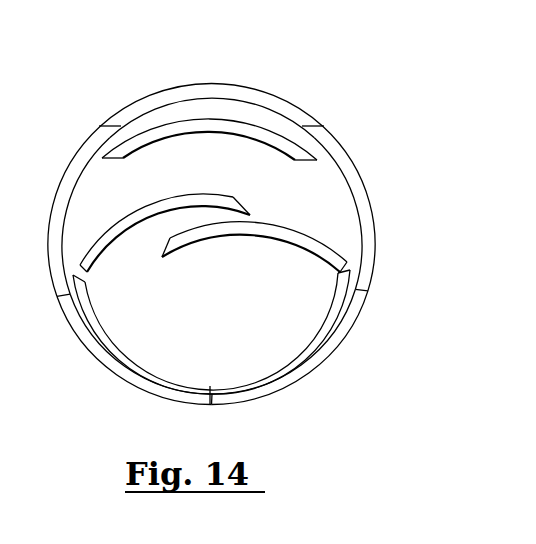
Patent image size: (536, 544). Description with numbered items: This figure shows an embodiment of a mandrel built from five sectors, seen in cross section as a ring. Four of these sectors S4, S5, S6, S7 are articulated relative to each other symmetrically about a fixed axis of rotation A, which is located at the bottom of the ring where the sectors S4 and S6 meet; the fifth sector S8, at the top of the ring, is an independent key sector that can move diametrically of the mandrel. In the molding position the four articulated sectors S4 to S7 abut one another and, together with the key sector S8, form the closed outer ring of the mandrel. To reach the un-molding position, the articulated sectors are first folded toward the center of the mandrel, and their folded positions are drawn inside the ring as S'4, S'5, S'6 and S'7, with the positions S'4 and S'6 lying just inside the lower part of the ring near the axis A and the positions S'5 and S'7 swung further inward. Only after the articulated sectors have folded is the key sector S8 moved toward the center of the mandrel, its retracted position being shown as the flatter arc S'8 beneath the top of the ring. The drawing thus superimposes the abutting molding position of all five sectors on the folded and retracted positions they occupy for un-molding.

The sector S4 is at (85, 345).
The sector S5 is at (73, 168).
The sector S6 is at (340, 340).
The sector S7 is at (347, 168).
The key sector S8 is at (184, 90).
The folded position of sector S'4 is at (141, 334).
The folded position of sector S'5 is at (127, 233).
The folded position of sector S'6 is at (280, 332).
The folded position of sector S'7 is at (254, 228).
The retracted position of key sector S'8 is at (209, 94).
The axis of rotation A is at (210, 388).